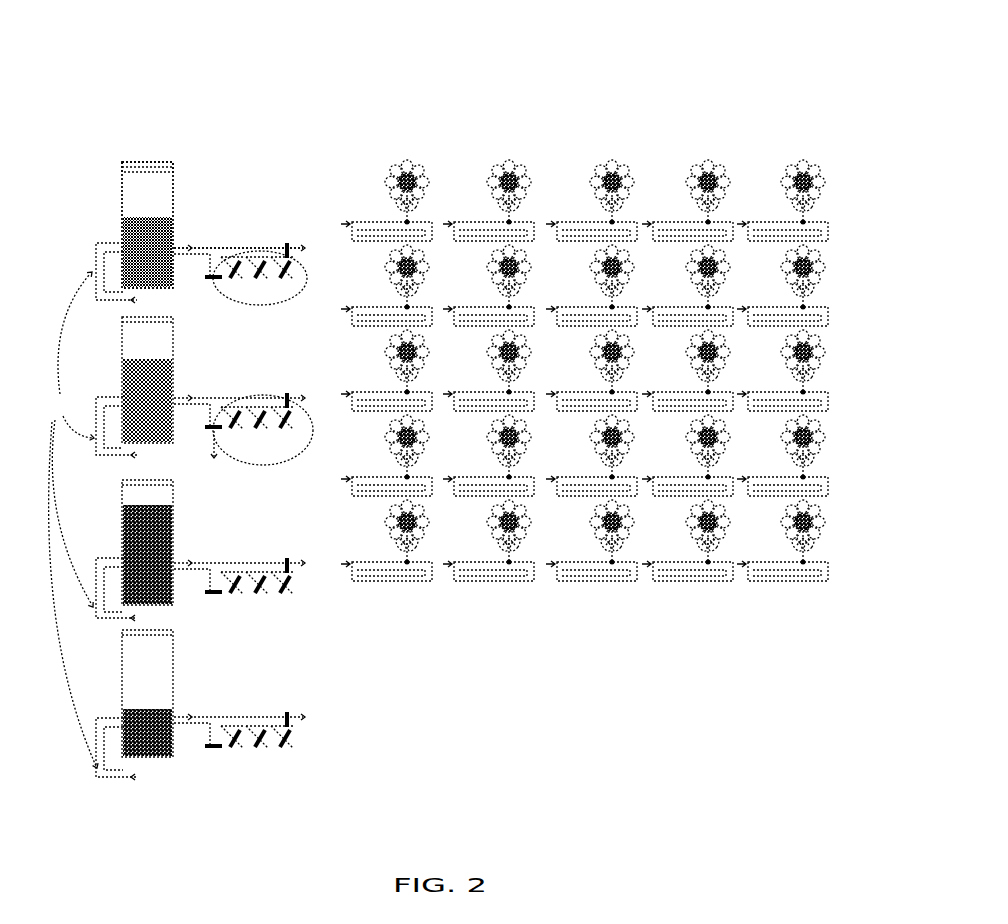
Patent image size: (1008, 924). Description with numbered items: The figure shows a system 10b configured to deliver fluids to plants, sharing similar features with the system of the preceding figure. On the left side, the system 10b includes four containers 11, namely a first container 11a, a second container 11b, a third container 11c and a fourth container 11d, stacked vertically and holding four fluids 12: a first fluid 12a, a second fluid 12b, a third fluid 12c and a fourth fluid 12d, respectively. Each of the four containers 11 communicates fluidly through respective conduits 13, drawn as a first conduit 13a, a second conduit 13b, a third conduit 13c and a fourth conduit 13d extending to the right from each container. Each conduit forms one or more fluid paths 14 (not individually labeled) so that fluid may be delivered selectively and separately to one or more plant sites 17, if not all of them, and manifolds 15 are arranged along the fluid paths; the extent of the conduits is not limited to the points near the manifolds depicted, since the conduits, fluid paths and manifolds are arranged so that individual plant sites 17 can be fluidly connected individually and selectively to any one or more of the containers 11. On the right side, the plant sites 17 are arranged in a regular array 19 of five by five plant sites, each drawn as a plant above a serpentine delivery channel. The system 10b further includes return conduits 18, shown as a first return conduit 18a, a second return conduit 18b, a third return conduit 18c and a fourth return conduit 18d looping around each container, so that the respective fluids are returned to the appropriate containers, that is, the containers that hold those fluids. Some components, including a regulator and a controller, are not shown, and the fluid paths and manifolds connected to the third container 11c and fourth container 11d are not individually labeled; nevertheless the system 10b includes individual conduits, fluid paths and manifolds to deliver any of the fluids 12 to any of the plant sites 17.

The system 10b is at (188, 870).
The containers 11 is at (148, 126).
The first container 11a is at (174, 165).
The second container 11b is at (174, 320).
The third container 11c is at (174, 483).
The fourth container 11d is at (174, 633).
The fluids 12 is at (126, 151).
The first fluid 12a is at (123, 224).
The second fluid 12b is at (123, 367).
The third fluid 12c is at (123, 540).
The fourth fluid 12d is at (123, 713).
The conduits 13 is at (199, 144).
The first conduit 13a is at (179, 247).
The second conduit 13b is at (180, 397).
The third conduit 13c is at (179, 562).
The fourth conduit 13d is at (179, 716).
The fluid paths 14 is at (262, 434).
The manifolds 15 is at (260, 281).
The plant sites 17 is at (426, 150).
The return conduits 18 is at (73, 519).
The first return conduit 18a is at (109, 286).
The second return conduit 18b is at (109, 438).
The third return conduit 18c is at (109, 602).
The fourth return conduit 18d is at (109, 758).
The array 19 is at (612, 627).